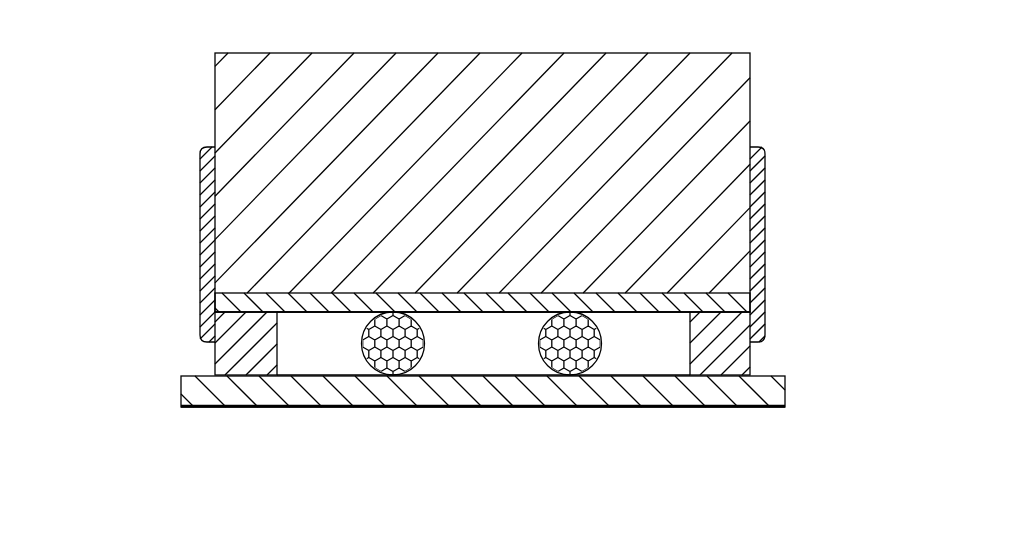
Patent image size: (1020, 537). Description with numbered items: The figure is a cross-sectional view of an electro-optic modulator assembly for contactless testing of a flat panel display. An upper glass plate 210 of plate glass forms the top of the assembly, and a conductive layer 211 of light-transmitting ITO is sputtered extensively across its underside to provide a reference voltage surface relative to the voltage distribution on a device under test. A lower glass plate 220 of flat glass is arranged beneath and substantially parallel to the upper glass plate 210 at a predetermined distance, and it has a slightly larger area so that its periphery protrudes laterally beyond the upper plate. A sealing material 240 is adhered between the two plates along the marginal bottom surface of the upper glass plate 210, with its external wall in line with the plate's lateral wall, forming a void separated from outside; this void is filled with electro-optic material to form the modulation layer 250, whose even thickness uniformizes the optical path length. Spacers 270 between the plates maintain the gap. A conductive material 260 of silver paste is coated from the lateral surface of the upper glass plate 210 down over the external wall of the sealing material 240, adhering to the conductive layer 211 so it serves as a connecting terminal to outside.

The upper glass plate 210 is at (743, 62).
The conductive layer 211 is at (736, 301).
The conductive material 260 is at (765, 236).
The sealing material 240 is at (742, 356).
The lower glass plate 220 is at (782, 402).
The modulation layer 250 is at (318, 348).
The spacer 270 is at (565, 372).